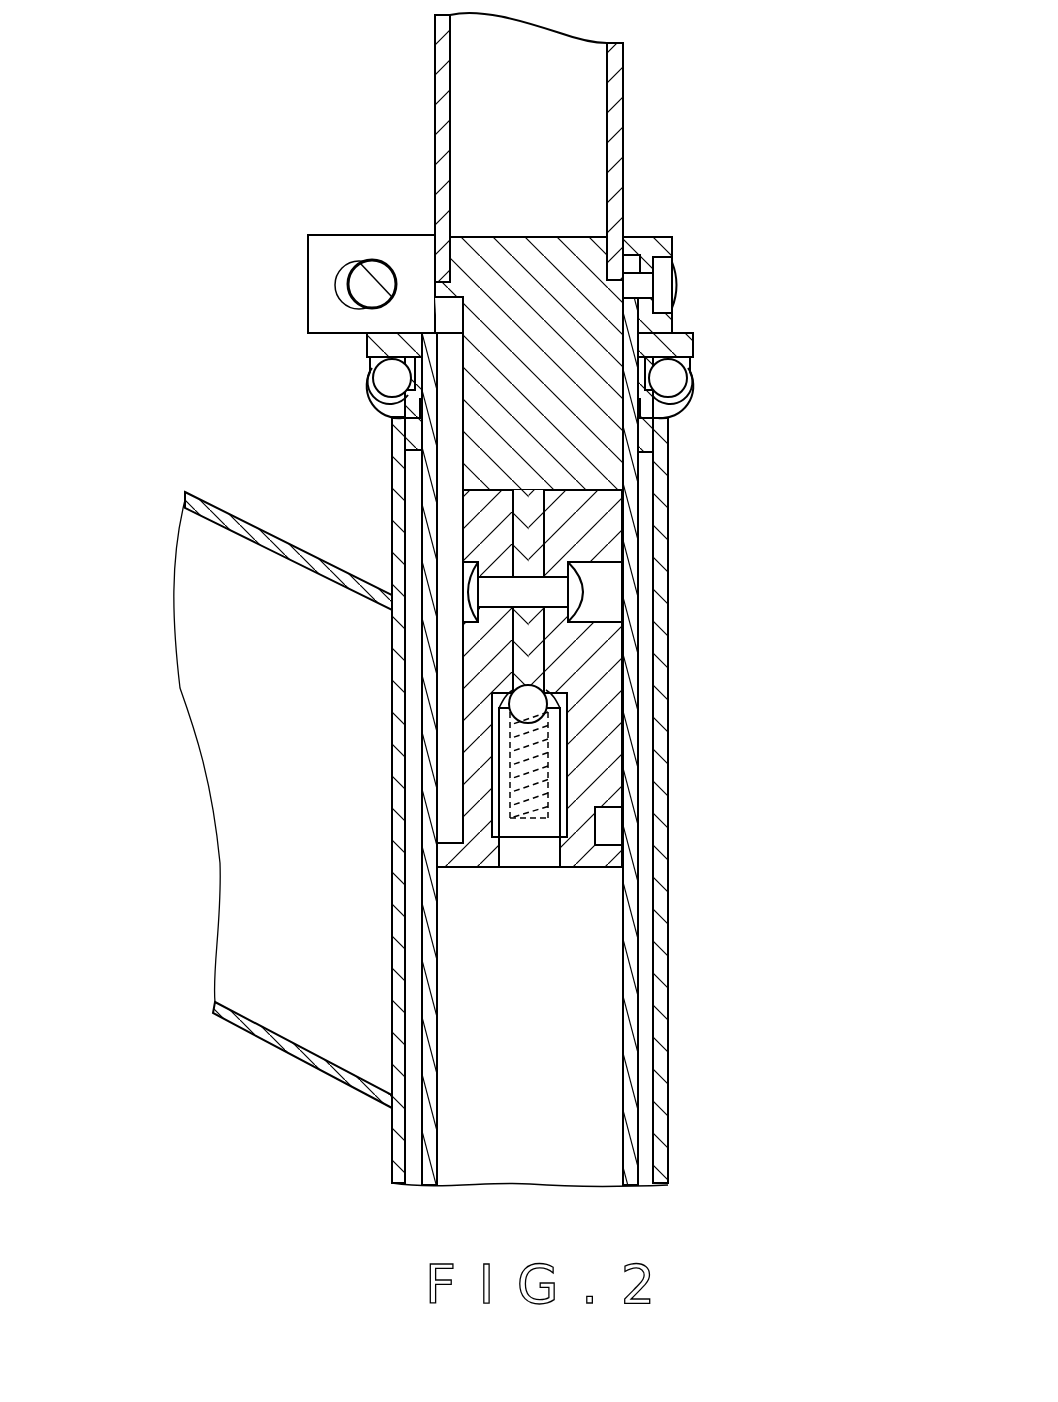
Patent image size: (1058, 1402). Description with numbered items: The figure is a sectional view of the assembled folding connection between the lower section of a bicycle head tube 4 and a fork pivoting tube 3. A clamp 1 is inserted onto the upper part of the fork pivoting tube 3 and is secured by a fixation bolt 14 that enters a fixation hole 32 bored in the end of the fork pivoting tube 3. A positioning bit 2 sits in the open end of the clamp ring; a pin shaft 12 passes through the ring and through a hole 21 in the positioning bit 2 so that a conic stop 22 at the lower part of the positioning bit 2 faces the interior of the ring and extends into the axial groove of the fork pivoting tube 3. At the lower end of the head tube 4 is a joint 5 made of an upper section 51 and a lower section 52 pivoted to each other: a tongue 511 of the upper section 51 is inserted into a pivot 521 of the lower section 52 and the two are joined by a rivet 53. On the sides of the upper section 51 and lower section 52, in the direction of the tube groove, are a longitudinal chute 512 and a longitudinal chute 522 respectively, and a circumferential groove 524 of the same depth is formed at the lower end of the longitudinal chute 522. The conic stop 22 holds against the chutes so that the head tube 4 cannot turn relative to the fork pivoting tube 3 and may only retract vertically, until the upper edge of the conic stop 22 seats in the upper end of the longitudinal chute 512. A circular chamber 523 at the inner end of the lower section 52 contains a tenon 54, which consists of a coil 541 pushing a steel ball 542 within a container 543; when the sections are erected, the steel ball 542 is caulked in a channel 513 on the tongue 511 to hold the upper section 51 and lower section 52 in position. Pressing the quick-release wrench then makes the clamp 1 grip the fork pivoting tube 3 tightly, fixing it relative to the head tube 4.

The clamp 1 is at (662, 247).
The positioning bit 2 is at (388, 248).
The fork pivoting tube 3 is at (633, 323).
The head tube 4 is at (615, 108).
The joint 5 is at (812, 665).
The pin shaft 12 is at (370, 282).
The fixation bolt 14 is at (667, 296).
The hole 21 is at (343, 272).
The conic stop 22 is at (448, 318).
The fixation hole 32 is at (634, 256).
The upper section 51 is at (560, 366).
The lower section 52 is at (587, 747).
The rivet 53 is at (545, 600).
The tenon 54 is at (127, 800).
The tongue 511 is at (530, 535).
The longitudinal chute 512 is at (453, 407).
The channel 513 is at (520, 690).
The pivot 521 is at (556, 545).
The longitudinal chute 522 is at (452, 592).
The circular chamber 523 is at (528, 860).
The circumferential groove 524 is at (612, 825).
The coil 541 is at (500, 755).
The steel ball 542 is at (530, 690).
The container 543 is at (503, 802).